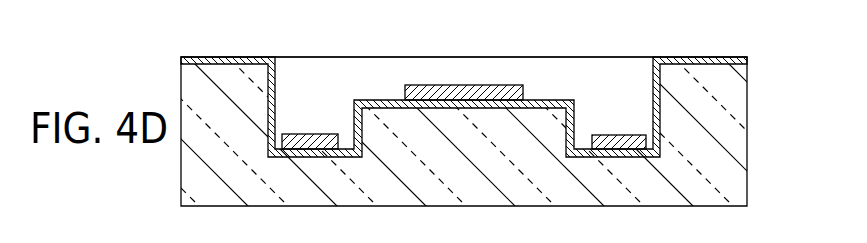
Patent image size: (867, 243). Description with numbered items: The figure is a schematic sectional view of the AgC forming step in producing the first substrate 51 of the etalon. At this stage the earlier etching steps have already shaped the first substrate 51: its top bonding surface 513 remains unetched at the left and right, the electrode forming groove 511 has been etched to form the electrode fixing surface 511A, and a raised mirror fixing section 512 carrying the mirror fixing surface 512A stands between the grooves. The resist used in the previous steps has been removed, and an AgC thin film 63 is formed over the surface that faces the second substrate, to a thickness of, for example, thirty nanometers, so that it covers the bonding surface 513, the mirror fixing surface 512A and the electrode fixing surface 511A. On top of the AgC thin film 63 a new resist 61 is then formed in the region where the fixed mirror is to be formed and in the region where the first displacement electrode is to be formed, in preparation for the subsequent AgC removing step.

The first substrate 51 is at (738, 143).
The electrode forming groove 511 is at (276, 100).
The electrode fixing surface 511A is at (582, 135).
The mirror fixing section 512 is at (537, 117).
The mirror fixing surface 512A is at (389, 99).
The bonding surface 513 is at (227, 57).
The resist 61 is at (317, 134).
The AgC thin film 63 is at (698, 57).